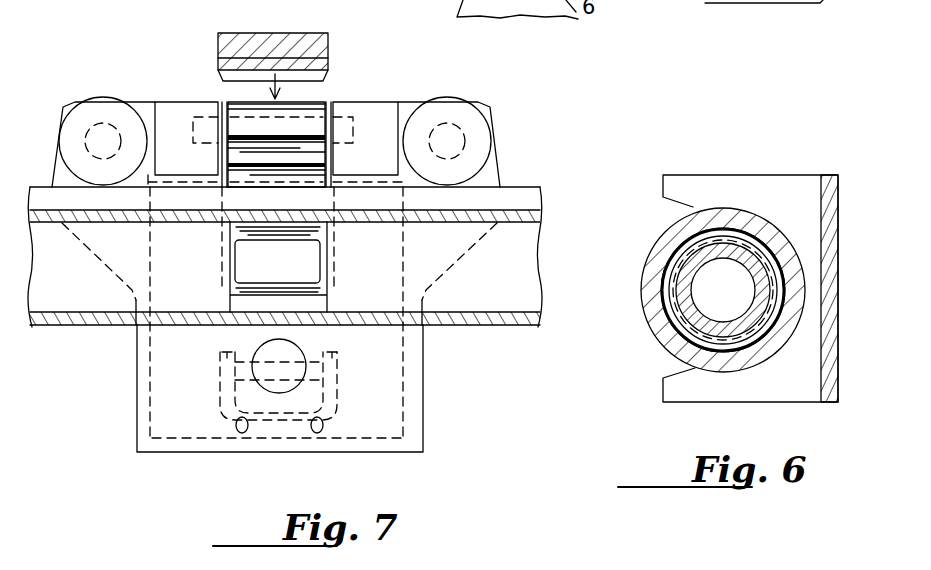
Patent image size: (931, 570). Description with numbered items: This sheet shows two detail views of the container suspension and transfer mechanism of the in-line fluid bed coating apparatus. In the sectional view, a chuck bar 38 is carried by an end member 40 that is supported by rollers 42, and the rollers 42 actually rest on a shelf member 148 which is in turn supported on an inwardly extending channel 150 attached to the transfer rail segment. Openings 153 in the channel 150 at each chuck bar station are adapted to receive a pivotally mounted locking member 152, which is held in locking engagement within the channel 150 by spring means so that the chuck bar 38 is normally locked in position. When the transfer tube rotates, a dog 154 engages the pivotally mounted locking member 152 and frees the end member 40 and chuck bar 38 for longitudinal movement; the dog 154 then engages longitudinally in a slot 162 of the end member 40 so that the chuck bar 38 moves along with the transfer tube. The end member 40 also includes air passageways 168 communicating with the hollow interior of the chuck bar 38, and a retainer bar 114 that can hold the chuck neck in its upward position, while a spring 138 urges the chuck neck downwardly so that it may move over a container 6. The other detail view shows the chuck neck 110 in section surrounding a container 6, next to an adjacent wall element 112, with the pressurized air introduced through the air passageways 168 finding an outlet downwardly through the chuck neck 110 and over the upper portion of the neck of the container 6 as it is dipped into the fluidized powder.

In FIG. 6, the container 6 is at (690, 302).
In FIG. 7, the chuck bar 38 is at (336, 397).
In FIG. 7, the end member 40 is at (424, 370).
In FIG. 7, the roller 42 is at (98, 100).
In FIG. 6, the chuck neck 110 is at (728, 215).
In FIG. 6, the side wall 112 is at (833, 178).
In FIG. 7, the retainer bar 114 is at (250, 388).
In FIG. 7, the spring 138 is at (268, 350).
In FIG. 7, the shelf member 148 is at (518, 187).
In FIG. 7, the channel 150 is at (532, 220).
In FIG. 7, the pivotally mounted locking member 152 is at (310, 113).
In FIG. 7, the opening 153 is at (332, 293).
In FIG. 7, the dog 154 is at (247, 42).
In FIG. 7, the slot 162 is at (382, 113).
In FIG. 7, the air passageway 168 is at (244, 432).